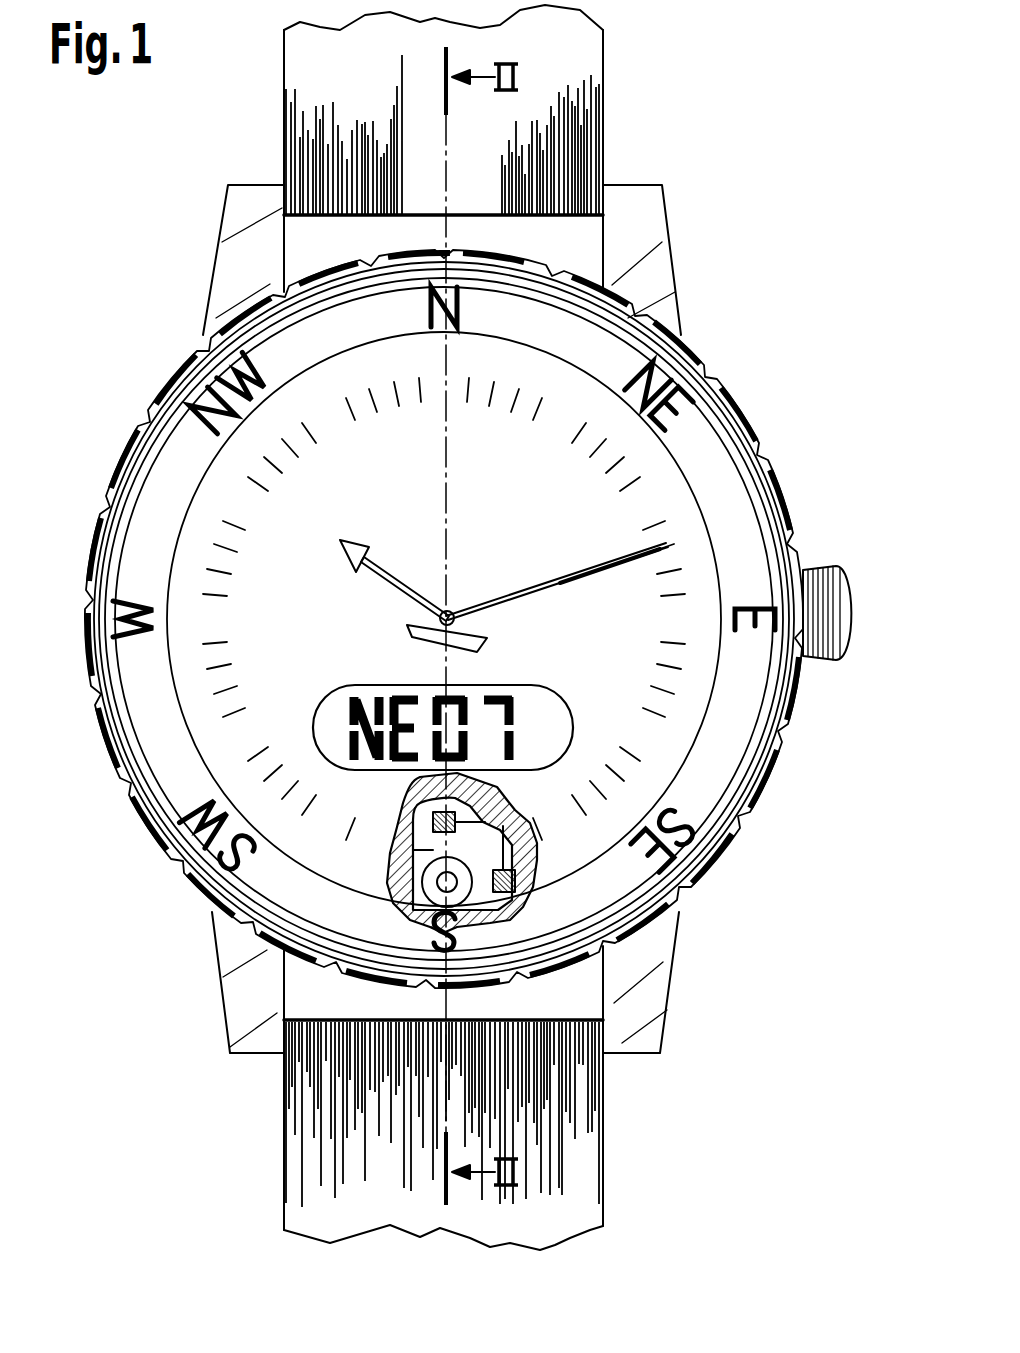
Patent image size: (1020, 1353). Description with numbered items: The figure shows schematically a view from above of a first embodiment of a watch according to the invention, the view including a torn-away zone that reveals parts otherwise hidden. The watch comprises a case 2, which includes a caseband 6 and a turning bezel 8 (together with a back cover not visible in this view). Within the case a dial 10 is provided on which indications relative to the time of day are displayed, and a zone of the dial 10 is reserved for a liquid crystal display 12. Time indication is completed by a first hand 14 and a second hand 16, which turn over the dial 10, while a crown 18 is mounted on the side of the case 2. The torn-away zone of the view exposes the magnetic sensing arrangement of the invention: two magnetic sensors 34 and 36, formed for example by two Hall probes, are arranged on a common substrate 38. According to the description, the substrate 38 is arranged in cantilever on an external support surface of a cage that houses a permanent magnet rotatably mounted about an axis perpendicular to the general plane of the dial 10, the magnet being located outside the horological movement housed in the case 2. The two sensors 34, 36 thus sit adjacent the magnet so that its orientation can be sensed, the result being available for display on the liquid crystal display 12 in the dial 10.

The case 2 is at (712, 336).
The caseband 6 is at (665, 992).
The turning bezel 8 is at (700, 805).
The dial 10 is at (657, 464).
The liquid crystal display 12 is at (333, 722).
The first hand 14 is at (553, 583).
The second hand 16 is at (415, 583).
The crown 18 is at (840, 652).
The magnetic sensor 34 is at (540, 873).
The magnetic sensor 36 is at (398, 817).
The substrate 38 is at (388, 878).